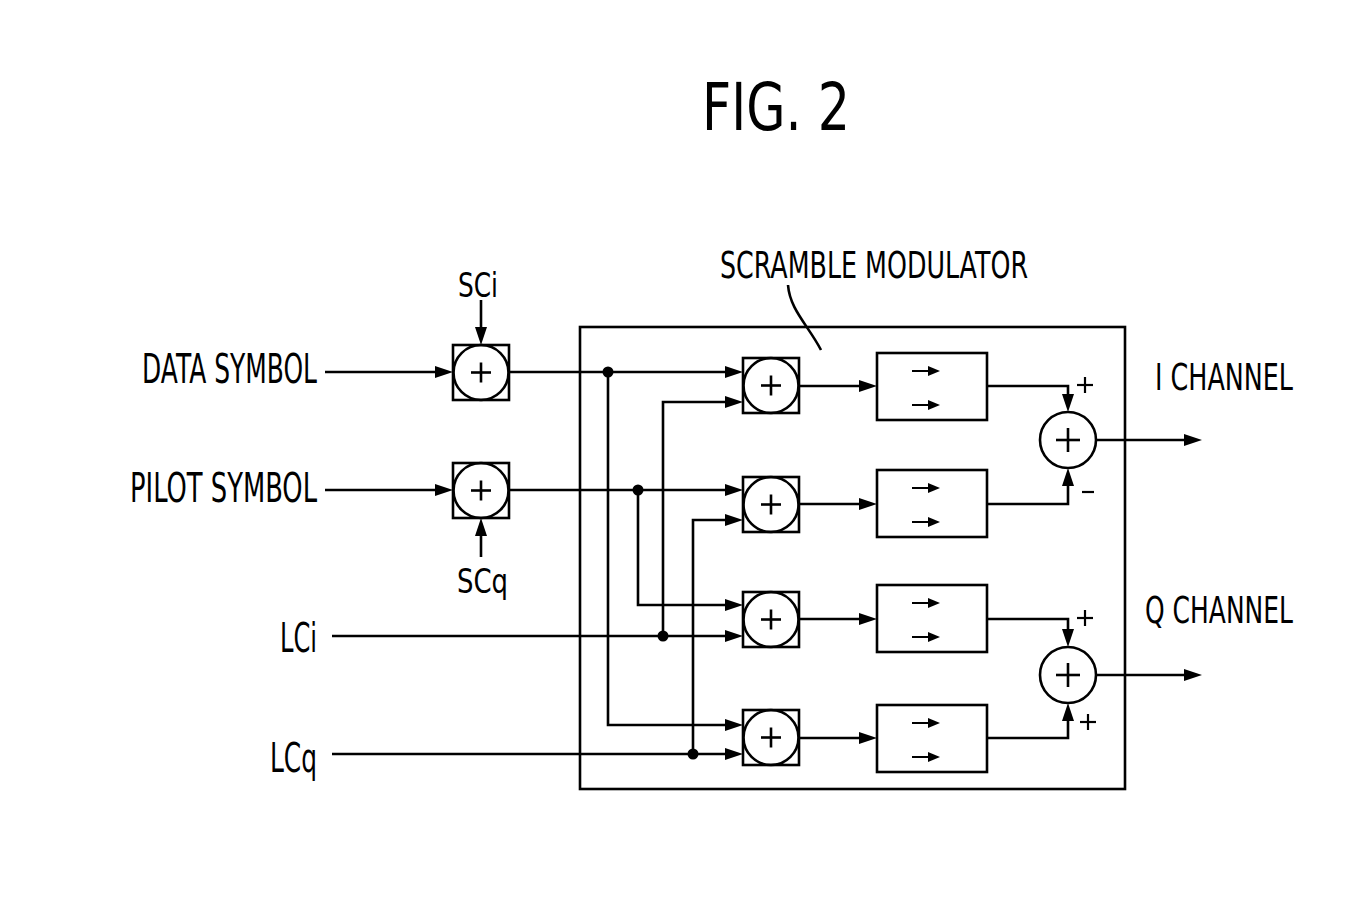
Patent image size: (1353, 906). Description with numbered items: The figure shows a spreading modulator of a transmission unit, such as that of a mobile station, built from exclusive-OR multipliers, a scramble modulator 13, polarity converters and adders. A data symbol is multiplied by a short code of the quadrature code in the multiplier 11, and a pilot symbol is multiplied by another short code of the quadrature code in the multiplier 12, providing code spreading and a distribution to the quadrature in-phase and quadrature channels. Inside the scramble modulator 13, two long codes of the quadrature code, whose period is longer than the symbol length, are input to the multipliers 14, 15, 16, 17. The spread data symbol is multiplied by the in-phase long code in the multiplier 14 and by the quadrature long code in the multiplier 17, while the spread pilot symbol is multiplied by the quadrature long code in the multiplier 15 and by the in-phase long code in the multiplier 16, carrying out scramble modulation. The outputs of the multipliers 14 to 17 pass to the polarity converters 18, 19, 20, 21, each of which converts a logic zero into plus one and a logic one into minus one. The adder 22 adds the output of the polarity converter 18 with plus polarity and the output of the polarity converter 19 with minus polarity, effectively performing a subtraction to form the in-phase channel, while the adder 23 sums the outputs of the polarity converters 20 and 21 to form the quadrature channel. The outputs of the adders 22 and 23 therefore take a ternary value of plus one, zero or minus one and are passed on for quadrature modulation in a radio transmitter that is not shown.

The multiplier 11 is at (459, 366).
The multiplier 12 is at (458, 484).
The scramble modulator 13 is at (641, 316).
The multiplier 14 is at (755, 370).
The multiplier 15 is at (755, 489).
The multiplier 16 is at (755, 604).
The multiplier 17 is at (755, 723).
The polarity converter 18 is at (915, 375).
The polarity converter 19 is at (915, 493).
The polarity converter 20 is at (915, 608).
The polarity converter 21 is at (915, 728).
The adder 22 is at (1050, 440).
The adder 23 is at (1050, 675).